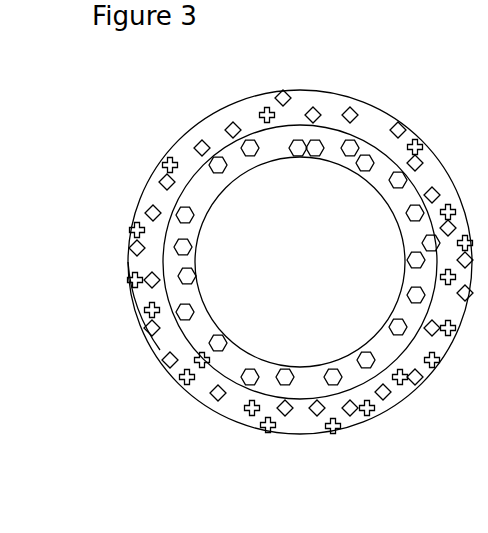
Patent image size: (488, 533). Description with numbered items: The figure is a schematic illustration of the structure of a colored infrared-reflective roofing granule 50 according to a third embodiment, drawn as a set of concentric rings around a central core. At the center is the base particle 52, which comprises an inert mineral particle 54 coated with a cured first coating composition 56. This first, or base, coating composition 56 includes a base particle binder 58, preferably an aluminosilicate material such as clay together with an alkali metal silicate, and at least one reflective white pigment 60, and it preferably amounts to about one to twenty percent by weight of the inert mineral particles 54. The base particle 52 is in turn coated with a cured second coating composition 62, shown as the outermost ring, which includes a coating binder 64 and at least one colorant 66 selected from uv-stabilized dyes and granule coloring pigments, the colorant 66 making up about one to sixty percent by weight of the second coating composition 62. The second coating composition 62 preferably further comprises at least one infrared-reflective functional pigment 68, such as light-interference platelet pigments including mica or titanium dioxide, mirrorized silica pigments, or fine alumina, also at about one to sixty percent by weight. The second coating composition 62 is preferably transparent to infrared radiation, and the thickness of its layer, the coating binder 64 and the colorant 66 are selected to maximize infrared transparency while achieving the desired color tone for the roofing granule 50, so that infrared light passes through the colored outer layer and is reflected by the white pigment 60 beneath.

The colored infrared-reflective roofing granule 50 is at (178, 135).
The base particle 52 is at (61, 170).
The inert mineral particle 54 is at (258, 218).
The cured first coating composition 56 is at (178, 235).
The base particle binder 58 is at (177, 267).
The reflective white pigment 60 is at (174, 318).
The cured second coating composition 62 is at (162, 348).
The coating binder 64 is at (212, 381).
The colorant 66 is at (212, 393).
The infrared-reflective functional pigment 68 is at (323, 430).